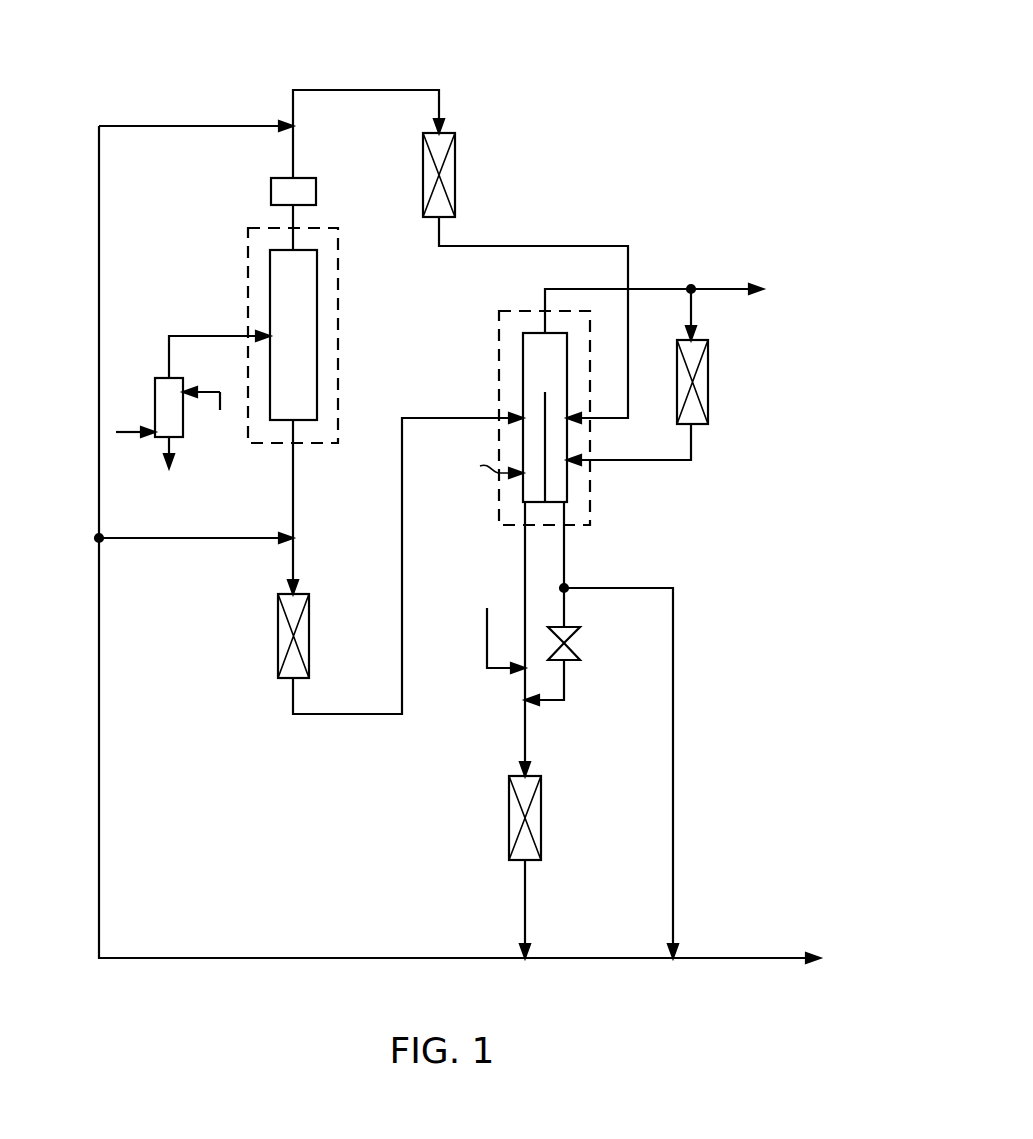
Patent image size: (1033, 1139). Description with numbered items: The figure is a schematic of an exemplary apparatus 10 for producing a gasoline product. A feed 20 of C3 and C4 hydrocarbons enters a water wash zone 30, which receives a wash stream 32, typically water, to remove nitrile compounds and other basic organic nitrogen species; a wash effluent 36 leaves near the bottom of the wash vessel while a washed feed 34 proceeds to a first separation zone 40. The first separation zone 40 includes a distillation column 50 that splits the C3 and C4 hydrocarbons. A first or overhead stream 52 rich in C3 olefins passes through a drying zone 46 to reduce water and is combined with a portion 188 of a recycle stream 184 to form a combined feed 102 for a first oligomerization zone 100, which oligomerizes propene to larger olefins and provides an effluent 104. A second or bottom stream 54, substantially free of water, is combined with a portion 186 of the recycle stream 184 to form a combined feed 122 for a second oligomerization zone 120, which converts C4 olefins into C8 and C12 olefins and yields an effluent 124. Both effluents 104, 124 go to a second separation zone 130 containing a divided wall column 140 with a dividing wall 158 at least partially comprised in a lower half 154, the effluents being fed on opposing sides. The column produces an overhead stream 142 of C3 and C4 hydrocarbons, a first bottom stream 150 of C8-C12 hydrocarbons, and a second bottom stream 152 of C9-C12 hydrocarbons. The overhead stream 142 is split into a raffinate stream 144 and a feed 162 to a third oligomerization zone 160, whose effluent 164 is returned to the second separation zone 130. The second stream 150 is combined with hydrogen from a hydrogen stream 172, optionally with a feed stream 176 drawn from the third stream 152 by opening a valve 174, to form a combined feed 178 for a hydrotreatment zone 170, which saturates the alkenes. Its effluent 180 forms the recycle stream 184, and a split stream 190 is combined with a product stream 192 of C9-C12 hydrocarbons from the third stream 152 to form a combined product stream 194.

The apparatus 10 is at (688, 64).
The feed 20 is at (126, 432).
The water wash zone 30 is at (166, 378).
The wash stream 32 is at (204, 412).
The washed feed 34 is at (220, 336).
The wash effluent 36 is at (165, 453).
The first separation zone 40 is at (263, 228).
The drying zone 46 is at (316, 191).
The distillation column 50 is at (293, 399).
The first or overhead stream 52 is at (293, 148).
The second or bottom stream 54 is at (293, 468).
The first oligomerization zone 100 is at (430, 133).
The combined feed 102 is at (369, 90).
The effluent 104 is at (439, 236).
The second oligomerization zone 120 is at (278, 633).
The combined feed 122 is at (293, 570).
The effluent 124 is at (293, 692).
The second separation zone 130 is at (506, 311).
The divided wall column 140 is at (545, 417).
The first or overhead stream 142 is at (658, 289).
The raffinate stream 144 is at (723, 289).
The second stream or first bottom stream 150 is at (525, 551).
The third stream or second bottom stream 152 is at (564, 551).
The lower half 154 is at (476, 465).
The dividing wall 158 is at (567, 440).
The third oligomerization zone 160 is at (708, 382).
The feed 162 is at (695, 314).
The effluent 164 is at (691, 443).
The hydrotreatment zone 170 is at (509, 818).
The hydrogen stream 172 is at (487, 637).
The valve 174 is at (580, 650).
The feed stream 176 is at (564, 686).
The combined feed 178 is at (525, 733).
The effluent or product stream 180 is at (525, 908).
The recycle stream 184 is at (368, 960).
The portion 186 is at (197, 538).
The portion 188 is at (197, 126).
The split stream 190 is at (597, 960).
The product stream 192 is at (673, 648).
The combined product stream 194 is at (735, 960).